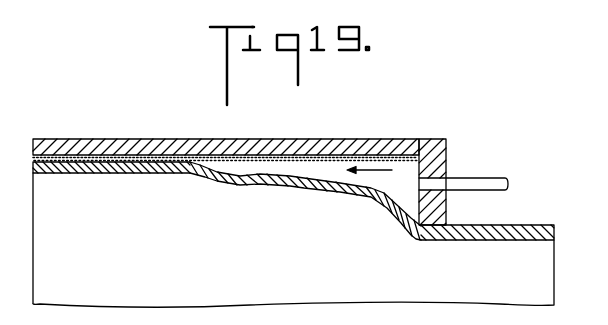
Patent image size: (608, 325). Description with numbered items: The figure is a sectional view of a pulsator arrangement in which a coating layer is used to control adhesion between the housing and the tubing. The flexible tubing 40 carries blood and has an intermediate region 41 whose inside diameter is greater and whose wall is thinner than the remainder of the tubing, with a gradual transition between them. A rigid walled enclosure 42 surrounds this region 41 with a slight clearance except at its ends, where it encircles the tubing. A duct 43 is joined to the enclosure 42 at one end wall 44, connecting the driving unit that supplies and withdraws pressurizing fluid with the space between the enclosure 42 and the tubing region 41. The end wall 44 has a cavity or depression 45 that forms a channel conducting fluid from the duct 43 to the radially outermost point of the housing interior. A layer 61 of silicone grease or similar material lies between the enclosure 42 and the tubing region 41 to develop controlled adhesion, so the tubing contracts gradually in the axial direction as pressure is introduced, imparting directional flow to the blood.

The flexible tubing 40 is at (542, 225).
The region of tubing 41 is at (115, 174).
The rigid walled enclosure 42 is at (212, 138).
The duct 43 is at (505, 176).
The end wall 44 is at (446, 145).
The cavity or depression 45 is at (401, 183).
The layer of silicone grease 61 is at (319, 157).